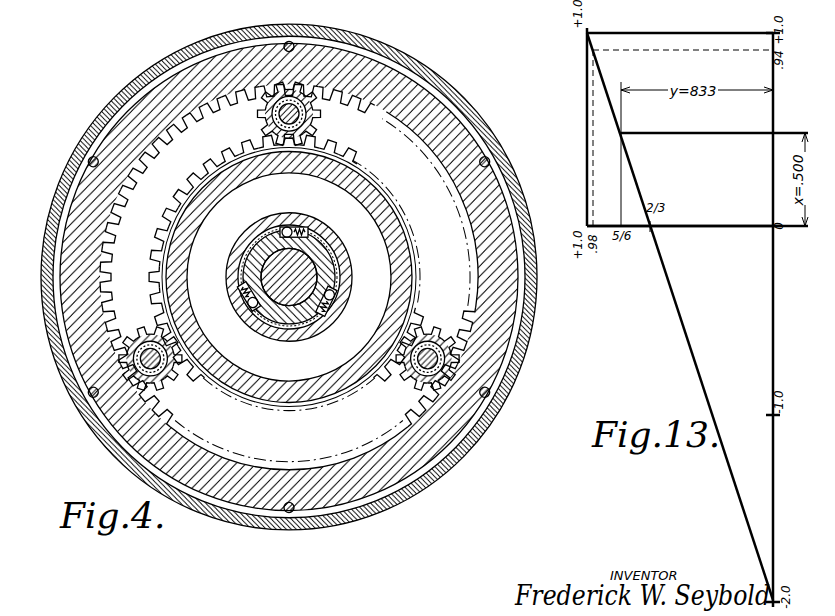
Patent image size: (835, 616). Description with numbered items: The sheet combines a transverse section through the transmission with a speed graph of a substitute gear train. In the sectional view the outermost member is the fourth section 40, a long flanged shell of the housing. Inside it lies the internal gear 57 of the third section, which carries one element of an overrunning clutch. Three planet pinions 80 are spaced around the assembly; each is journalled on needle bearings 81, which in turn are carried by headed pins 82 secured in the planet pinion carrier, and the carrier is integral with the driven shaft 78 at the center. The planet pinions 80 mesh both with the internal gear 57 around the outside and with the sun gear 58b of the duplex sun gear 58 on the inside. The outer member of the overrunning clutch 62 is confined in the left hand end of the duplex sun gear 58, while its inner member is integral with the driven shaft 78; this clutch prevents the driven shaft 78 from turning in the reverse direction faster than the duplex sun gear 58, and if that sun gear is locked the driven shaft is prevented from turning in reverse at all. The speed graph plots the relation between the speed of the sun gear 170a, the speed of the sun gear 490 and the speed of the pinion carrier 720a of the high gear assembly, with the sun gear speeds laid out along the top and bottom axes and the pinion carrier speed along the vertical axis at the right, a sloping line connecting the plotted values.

In FIG. 4, the fourth section 40 is at (421, 43).
In FIG. 4, the internal gear 57 is at (163, 125).
In FIG. 4, the duplex sun gear 58 is at (263, 218).
In FIG. 4, the sun gear 58b is at (180, 212).
In FIG. 4, the overrunning clutch 62 is at (288, 230).
In FIG. 4, the driven shaft 78 is at (307, 273).
In FIG. 4, the planet pinions 80 is at (322, 123).
In FIG. 4, the needle bearings 81 is at (312, 102).
In FIG. 4, the headed pins 82 is at (275, 126).
In FIG. 13, the sun gear 170a is at (680, 22).
In FIG. 13, the sun gear 490 is at (684, 247).
In FIG. 13, the pinion carrier 720a is at (784, 320).